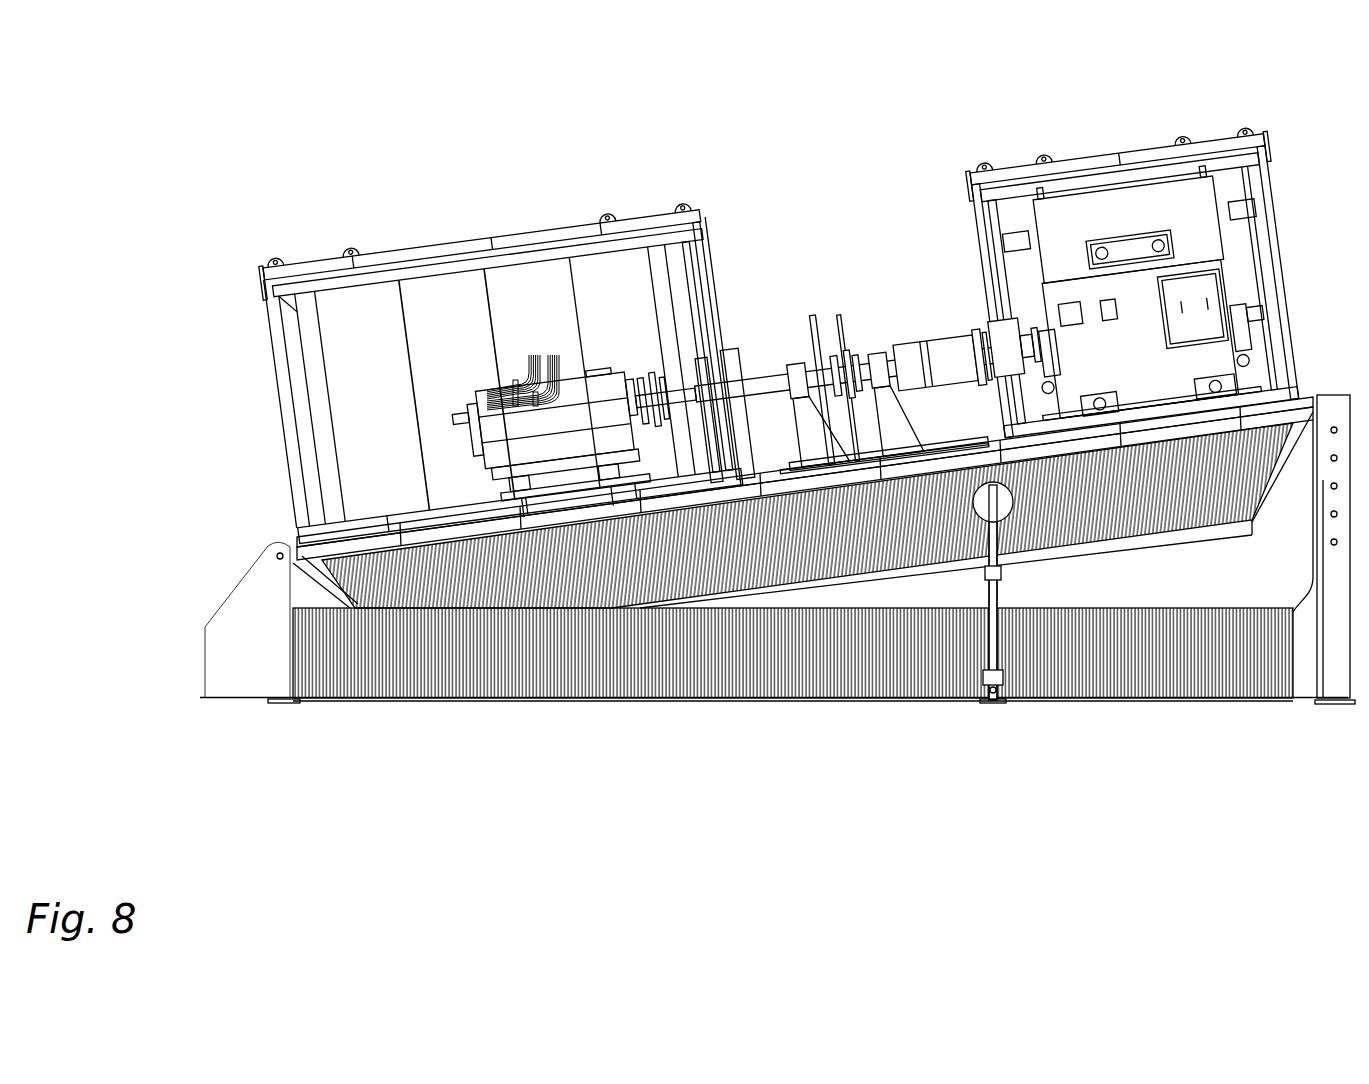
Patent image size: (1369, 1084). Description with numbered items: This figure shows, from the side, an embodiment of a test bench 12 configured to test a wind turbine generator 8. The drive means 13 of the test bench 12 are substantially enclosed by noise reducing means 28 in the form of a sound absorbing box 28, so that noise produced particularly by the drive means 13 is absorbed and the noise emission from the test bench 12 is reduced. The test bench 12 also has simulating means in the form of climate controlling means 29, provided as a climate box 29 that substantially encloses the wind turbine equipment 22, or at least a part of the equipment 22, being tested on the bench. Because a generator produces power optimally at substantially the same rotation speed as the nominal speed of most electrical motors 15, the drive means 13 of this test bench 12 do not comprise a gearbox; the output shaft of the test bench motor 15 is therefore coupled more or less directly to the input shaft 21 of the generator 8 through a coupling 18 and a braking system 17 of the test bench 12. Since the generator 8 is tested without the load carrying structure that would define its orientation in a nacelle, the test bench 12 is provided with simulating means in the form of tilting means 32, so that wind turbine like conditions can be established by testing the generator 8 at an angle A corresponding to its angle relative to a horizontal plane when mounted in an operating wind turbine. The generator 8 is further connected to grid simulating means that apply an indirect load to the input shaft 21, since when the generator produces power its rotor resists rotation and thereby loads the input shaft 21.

The test bench 12 is at (238, 137).
The climate controlling means 29 is at (356, 268).
The wind turbine equipment 22 is at (525, 345).
The wind turbine generator 8 is at (578, 386).
The input shaft 21 is at (648, 392).
The braking system 17 is at (838, 345).
The coupling 18 is at (934, 335).
The noise reducing means 28 is at (1098, 160).
The electrical motor 15 is at (1142, 317).
The drive means 13 is at (1233, 290).
The tilting means 32 is at (1000, 576).
The angle A is at (605, 680).